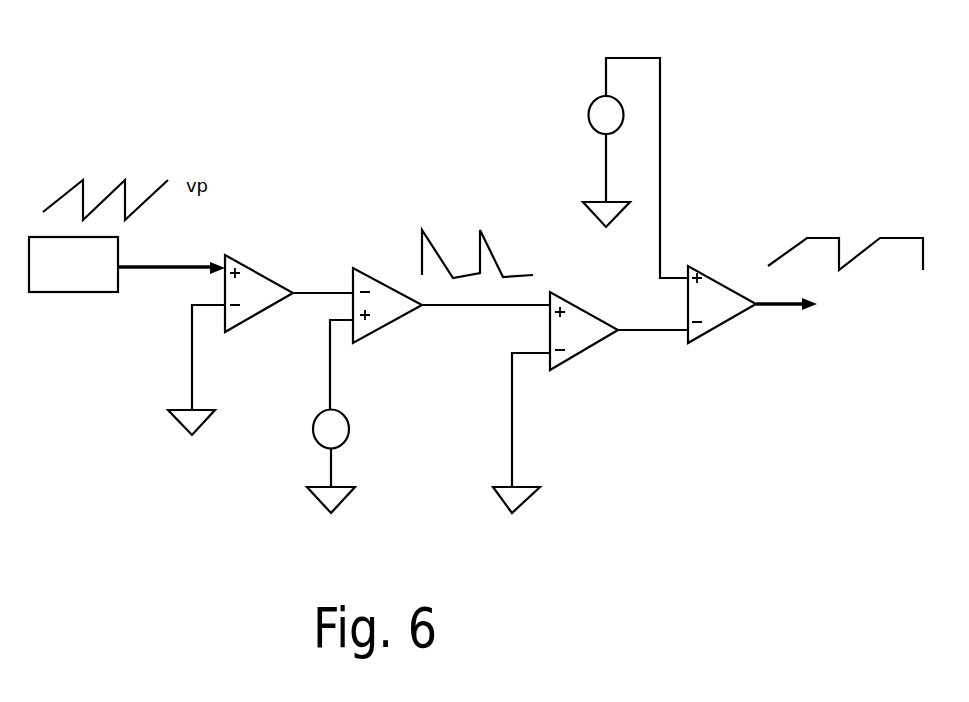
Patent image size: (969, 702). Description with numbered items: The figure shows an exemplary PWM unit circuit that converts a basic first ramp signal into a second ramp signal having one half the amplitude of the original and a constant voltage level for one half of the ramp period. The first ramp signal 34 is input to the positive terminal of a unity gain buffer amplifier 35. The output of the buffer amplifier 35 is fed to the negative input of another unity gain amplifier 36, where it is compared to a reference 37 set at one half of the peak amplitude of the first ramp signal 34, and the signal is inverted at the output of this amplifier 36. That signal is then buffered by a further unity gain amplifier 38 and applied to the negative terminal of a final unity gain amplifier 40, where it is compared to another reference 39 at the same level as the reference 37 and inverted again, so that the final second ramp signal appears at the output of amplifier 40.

The first ramp signal 34 is at (97, 292).
The unity gain buffer amplifier 35 is at (255, 265).
The unity gain amplifier 36 is at (368, 275).
The reference 37 is at (337, 450).
The unity gain amplifier 38 is at (558, 365).
The reference 39 is at (588, 108).
The unity gain amplifier 40 is at (723, 283).